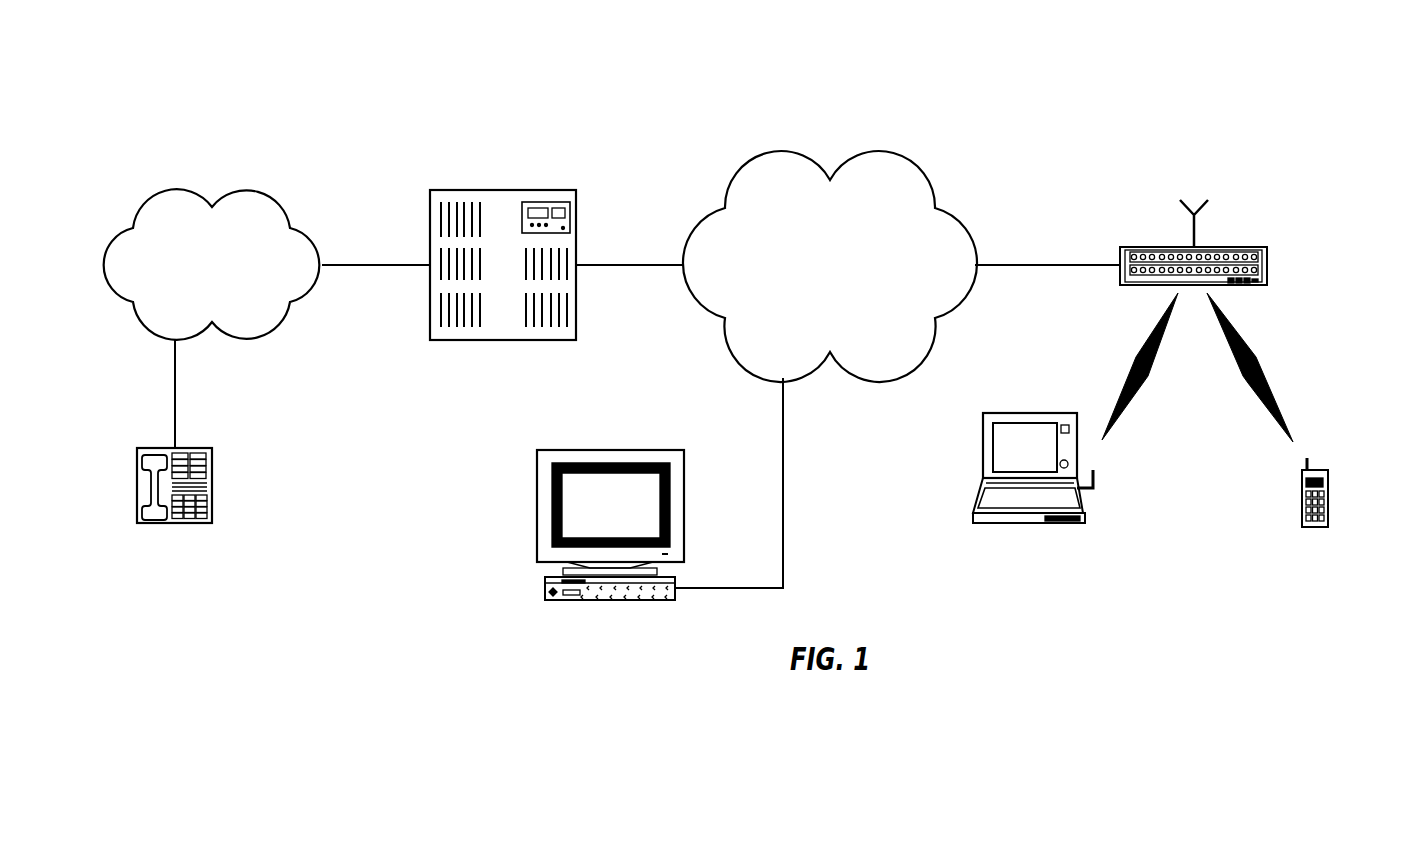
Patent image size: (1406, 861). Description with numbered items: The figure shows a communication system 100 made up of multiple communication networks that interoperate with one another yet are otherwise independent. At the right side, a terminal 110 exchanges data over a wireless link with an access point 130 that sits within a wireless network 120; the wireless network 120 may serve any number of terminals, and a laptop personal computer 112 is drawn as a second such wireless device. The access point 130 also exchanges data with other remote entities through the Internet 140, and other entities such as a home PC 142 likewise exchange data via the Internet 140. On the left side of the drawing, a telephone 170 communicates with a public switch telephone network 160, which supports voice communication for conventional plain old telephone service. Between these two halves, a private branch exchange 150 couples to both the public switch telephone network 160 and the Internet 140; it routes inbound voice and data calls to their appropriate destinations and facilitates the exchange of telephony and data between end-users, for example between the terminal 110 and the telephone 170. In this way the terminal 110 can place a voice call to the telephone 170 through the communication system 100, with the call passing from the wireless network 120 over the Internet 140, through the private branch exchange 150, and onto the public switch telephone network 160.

The communication system 100 is at (1340, 80).
The terminal 110 is at (1319, 469).
The laptop personal computer 112 is at (1022, 413).
The wireless network 120 is at (1280, 167).
The access point 130 is at (1232, 247).
The Internet 140 is at (816, 162).
The home PC 142 is at (603, 450).
The private branch exchange 150 is at (498, 189).
The public switch telephone network 160 is at (202, 194).
The telephone 170 is at (198, 448).